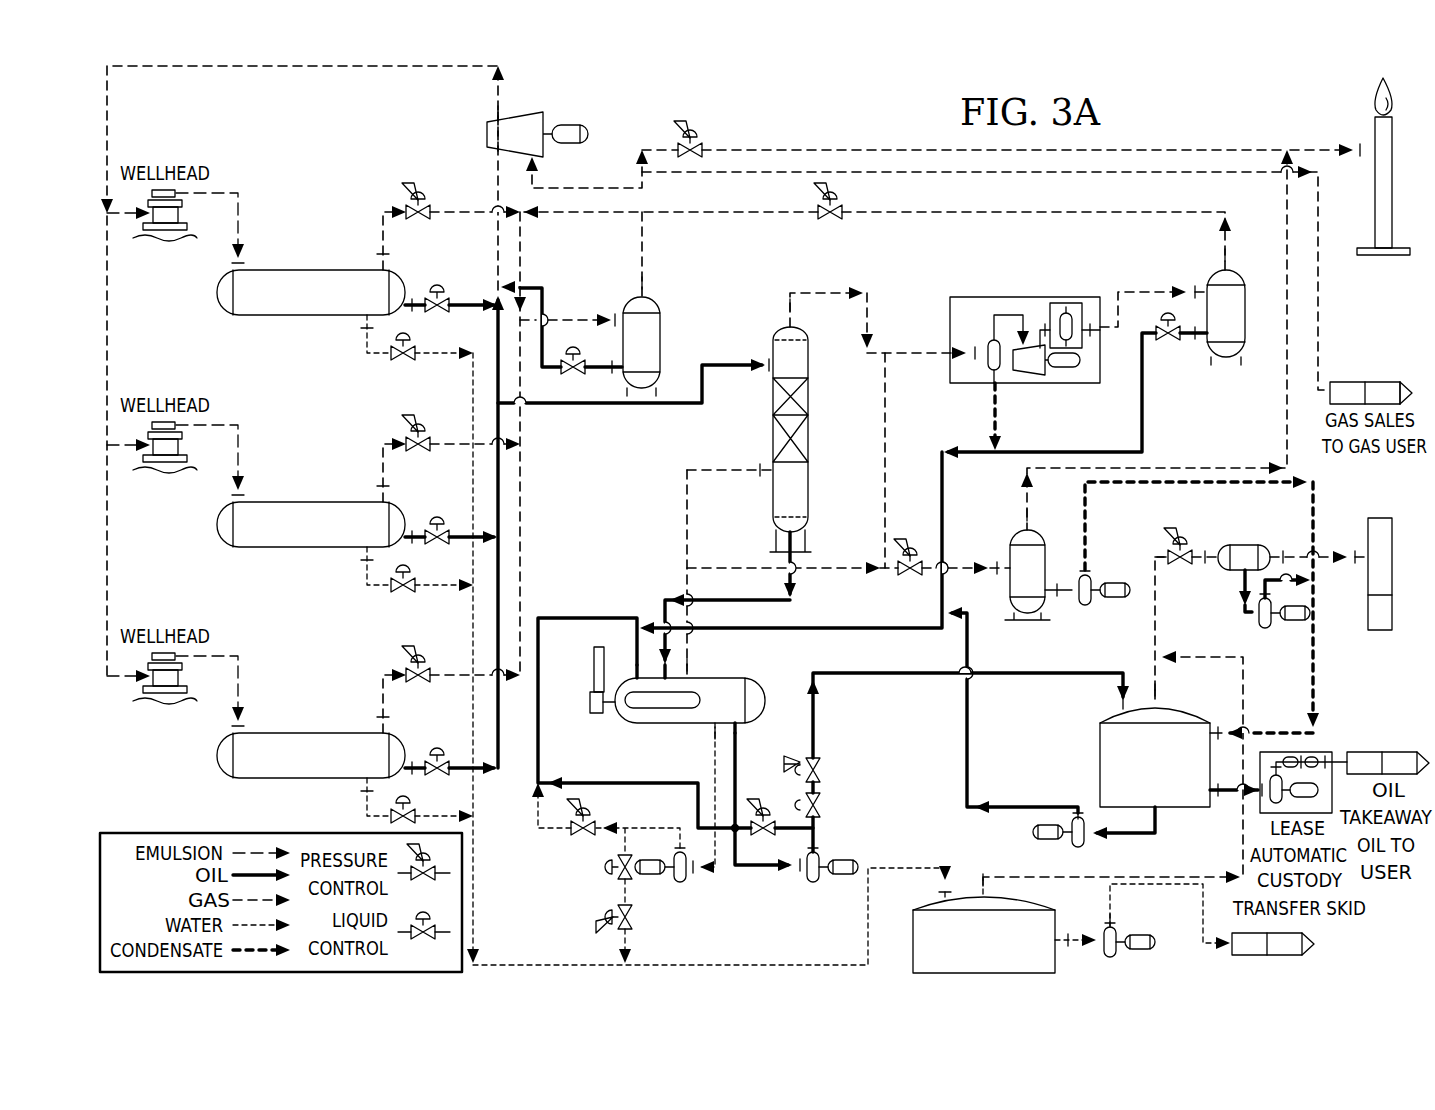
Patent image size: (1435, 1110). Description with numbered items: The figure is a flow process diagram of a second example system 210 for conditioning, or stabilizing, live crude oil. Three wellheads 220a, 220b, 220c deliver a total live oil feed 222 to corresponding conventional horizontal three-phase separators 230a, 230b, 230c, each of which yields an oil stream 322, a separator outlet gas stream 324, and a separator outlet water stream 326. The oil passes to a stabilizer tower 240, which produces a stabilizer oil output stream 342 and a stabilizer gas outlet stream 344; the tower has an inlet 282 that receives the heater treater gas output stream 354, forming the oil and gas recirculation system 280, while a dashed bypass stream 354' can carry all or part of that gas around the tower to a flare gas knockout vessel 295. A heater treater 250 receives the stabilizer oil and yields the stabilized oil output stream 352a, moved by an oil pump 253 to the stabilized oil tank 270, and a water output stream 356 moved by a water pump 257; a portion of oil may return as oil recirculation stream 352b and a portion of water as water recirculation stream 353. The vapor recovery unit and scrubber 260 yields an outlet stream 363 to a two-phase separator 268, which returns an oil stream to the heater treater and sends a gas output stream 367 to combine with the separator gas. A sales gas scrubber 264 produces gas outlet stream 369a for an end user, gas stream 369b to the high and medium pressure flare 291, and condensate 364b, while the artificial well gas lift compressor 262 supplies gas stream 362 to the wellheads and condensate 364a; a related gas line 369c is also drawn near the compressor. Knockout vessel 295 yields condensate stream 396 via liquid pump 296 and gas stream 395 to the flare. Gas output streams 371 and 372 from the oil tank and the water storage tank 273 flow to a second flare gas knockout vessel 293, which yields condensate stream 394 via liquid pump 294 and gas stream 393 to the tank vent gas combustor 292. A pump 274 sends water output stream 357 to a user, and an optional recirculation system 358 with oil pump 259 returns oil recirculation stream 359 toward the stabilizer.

The system for conditioning live crude oil 210 is at (1165, 125).
The wellhead 220a is at (167, 240).
The wellhead 220b is at (167, 472).
The wellhead 220c is at (167, 703).
The live oil feed 222 is at (233, 190).
The separator 230a is at (273, 316).
The separator 230b is at (273, 548).
The separator 230c is at (273, 779).
The stabilizer tower 240 is at (808, 420).
The heater treater 250 is at (722, 678).
The oil pump 253 is at (845, 880).
The water pump 257 is at (690, 870).
The oil pump 259 is at (1095, 843).
The vapor recovery unit and scrubber 260 is at (1015, 385).
The artificial well gas lift compressor 262 is at (487, 125).
The sales gas scrubber 264 is at (648, 298).
The two-phase separator 268 is at (1230, 270).
The stabilized oil tank 270 is at (1098, 723).
The water storage tank 273 is at (913, 942).
The pump 274 is at (1150, 950).
The oil and gas recirculation system 280 is at (668, 508).
The inlet 282 is at (762, 470).
The high and medium pressure flare 291 is at (1375, 130).
The tank vent gas combustor 292 is at (1380, 518).
The flare gas knockout vessel 293 is at (1245, 580).
The liquid pump 294 is at (1257, 615).
The flare gas knockout vessel 295 is at (1018, 530).
The liquid pump 296 is at (1112, 582).
The oil stream 322 is at (443, 293).
The separator outlet gas stream 324 is at (384, 212).
The separator outlet water stream 326 is at (367, 345).
The stabilizer oil output stream 342 is at (772, 600).
The stabilizer gas outlet stream 344 is at (867, 315).
The heater treater oil output stream 352a is at (737, 746).
The oil recirculation stream 352b is at (538, 790).
The water recirculation stream 353 is at (560, 832).
The heater treater gas output stream 354 is at (746, 547).
The heater treater gas bypass stream 354' is at (917, 544).
The heater treater water output stream 356 is at (737, 771).
The water output stream 357 is at (1068, 938).
The recirculation system 358 is at (1078, 812).
The oil recirculation stream 359 is at (967, 803).
The gas lift gas stream 362 is at (305, 66).
The VRU outlet stream 363 is at (1142, 290).
The condensate 364a is at (498, 180).
The condensate 364b is at (542, 348).
The gas output stream 367 is at (893, 212).
The gas outlet stream 369a is at (818, 172).
The gas stream 369b is at (752, 150).
The gas line 369c is at (597, 188).
The gas output stream 371 is at (1157, 675).
The gas output stream 372 is at (1080, 877).
The gas stream 393 is at (1320, 557).
The condensate stream 394 is at (1292, 588).
The gas output stream 395 is at (1287, 452).
The condensate output stream 396 is at (1088, 528).